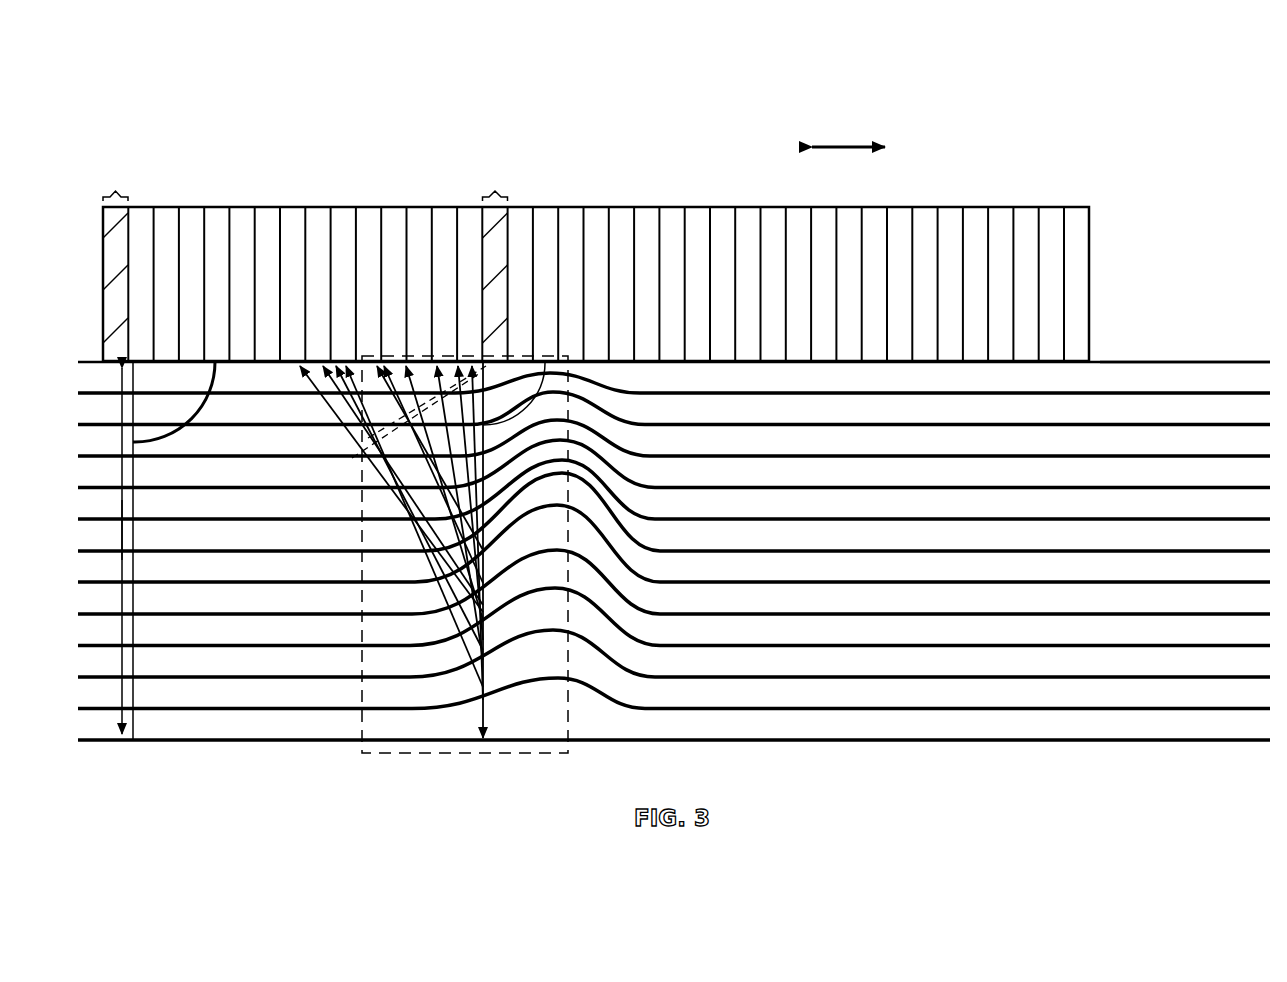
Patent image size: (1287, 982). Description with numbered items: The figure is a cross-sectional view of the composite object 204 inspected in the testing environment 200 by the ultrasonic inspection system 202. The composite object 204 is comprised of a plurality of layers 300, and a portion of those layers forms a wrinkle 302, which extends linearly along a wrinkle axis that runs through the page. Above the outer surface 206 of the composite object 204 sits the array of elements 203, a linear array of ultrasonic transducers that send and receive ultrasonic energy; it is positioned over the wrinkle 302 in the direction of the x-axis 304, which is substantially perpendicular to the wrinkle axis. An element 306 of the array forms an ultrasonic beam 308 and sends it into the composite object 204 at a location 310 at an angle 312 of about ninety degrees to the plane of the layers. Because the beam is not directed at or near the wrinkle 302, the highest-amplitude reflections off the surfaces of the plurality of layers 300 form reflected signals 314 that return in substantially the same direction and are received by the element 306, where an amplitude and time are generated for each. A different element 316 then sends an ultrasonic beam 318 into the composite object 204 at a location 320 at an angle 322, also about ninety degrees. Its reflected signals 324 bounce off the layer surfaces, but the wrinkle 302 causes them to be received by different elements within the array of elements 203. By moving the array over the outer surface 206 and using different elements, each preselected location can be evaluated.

The testing environment 200 is at (1077, 149).
The ultrasonic inspection system 202 is at (651, 204).
The array of elements 203 is at (726, 219).
The composite object 204 is at (1096, 362).
The outer surface 206 is at (1168, 332).
The plurality of layers 300 is at (1191, 369).
The wrinkle 302 is at (540, 758).
The x-axis 304 is at (846, 146).
The element 306 is at (115, 251).
The ultrasonic beam 308 is at (133, 505).
The location 310 is at (108, 366).
The angle 312 is at (165, 432).
The reflected signals 314 is at (124, 548).
The element 316 is at (494, 251).
The ultrasonic beam 318 is at (481, 718).
The location 320 is at (472, 348).
The angle 322 is at (548, 410).
The reflected signals 324 is at (352, 459).